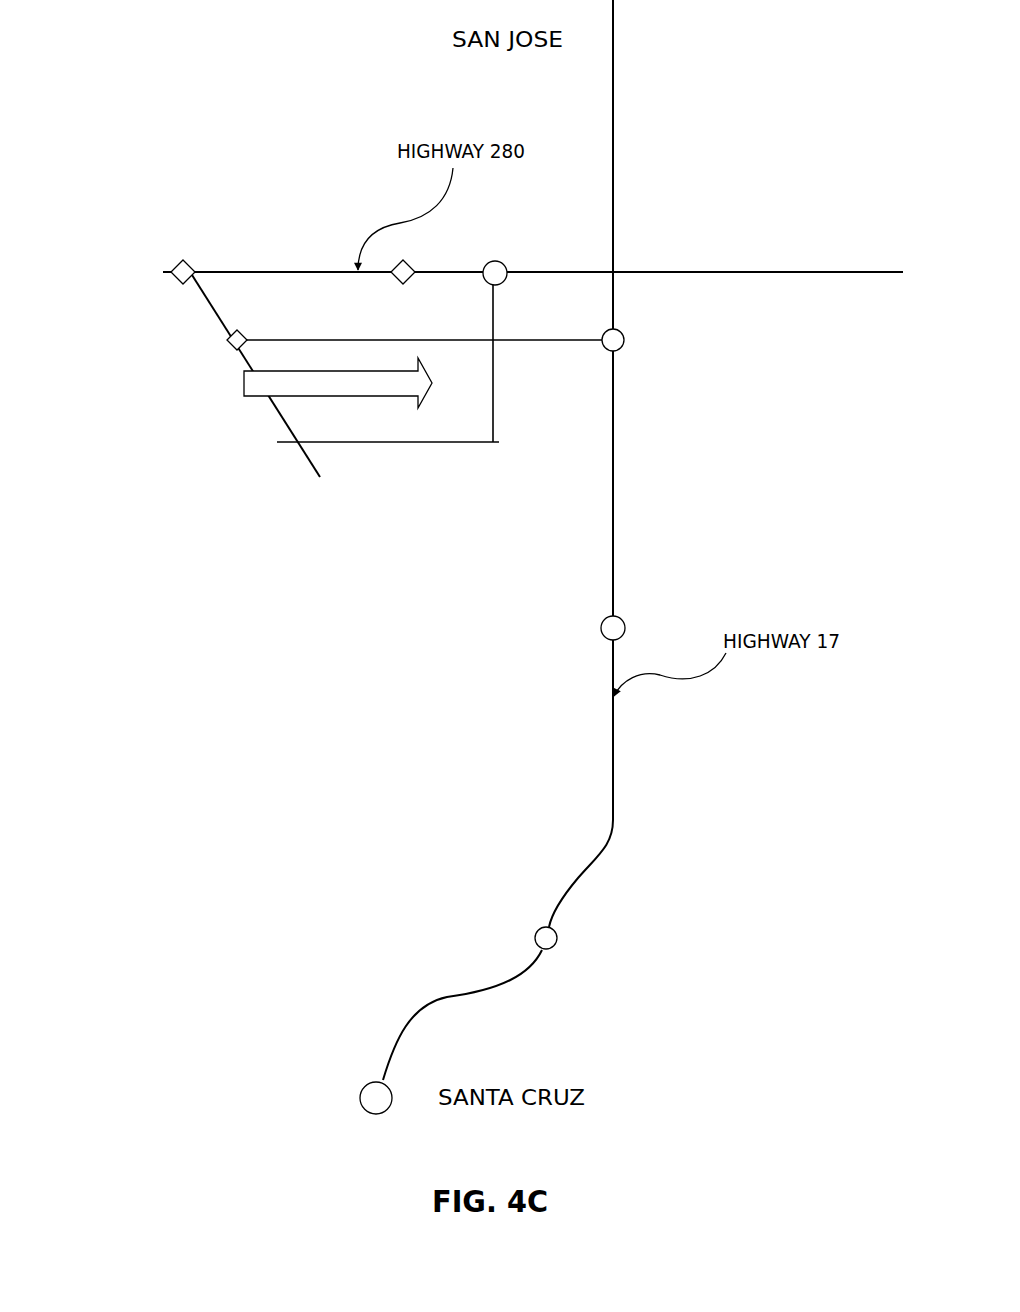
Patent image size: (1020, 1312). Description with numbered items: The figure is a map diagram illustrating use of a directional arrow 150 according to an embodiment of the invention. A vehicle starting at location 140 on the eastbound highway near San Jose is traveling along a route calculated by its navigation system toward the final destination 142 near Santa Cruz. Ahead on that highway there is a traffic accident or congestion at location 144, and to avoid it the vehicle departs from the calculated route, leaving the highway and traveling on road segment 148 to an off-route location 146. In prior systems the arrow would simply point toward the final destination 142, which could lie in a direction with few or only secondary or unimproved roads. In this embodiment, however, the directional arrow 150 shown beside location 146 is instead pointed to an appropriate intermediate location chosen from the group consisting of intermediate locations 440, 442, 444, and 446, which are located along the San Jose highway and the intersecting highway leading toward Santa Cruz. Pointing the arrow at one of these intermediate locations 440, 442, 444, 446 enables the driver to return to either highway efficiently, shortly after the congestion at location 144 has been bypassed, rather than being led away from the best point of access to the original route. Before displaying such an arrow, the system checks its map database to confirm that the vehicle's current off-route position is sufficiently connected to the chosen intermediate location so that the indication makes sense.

The location 140 is at (171, 279).
The destination 142 is at (375, 1079).
The location 144 is at (418, 269).
The location 146 is at (233, 347).
The road segment 148 is at (216, 318).
The directional arrow 150 is at (243, 397).
The intermediate location 440 is at (504, 261).
The intermediate location 442 is at (626, 336).
The intermediate location 444 is at (626, 622).
The intermediate location 446 is at (560, 931).